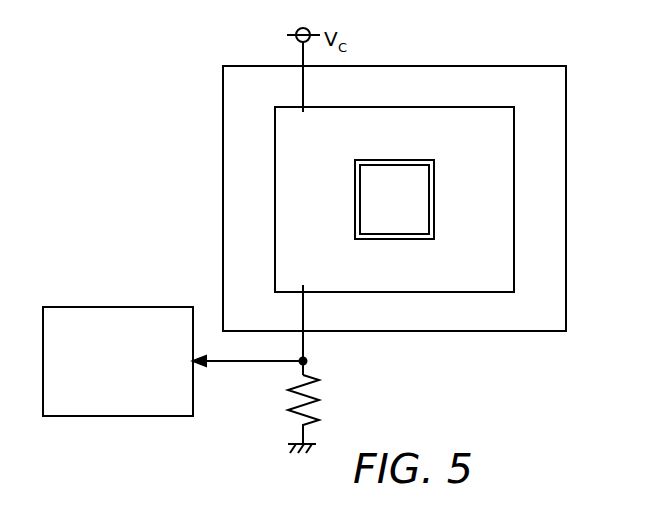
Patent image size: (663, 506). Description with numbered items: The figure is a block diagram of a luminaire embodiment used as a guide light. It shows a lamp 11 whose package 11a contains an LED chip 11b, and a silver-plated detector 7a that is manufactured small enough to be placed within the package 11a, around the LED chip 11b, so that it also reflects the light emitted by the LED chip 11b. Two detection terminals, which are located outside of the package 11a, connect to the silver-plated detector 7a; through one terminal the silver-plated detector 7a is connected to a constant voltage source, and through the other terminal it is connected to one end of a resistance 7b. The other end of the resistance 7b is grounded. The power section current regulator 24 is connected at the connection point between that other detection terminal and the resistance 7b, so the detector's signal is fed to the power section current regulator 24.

The silver-plated detector 7a is at (377, 118).
The resistance 7b is at (316, 388).
The lamp 11 is at (551, 108).
The package 11a is at (545, 257).
The LED chip 11b is at (413, 205).
The power section current regulator 24 is at (88, 307).